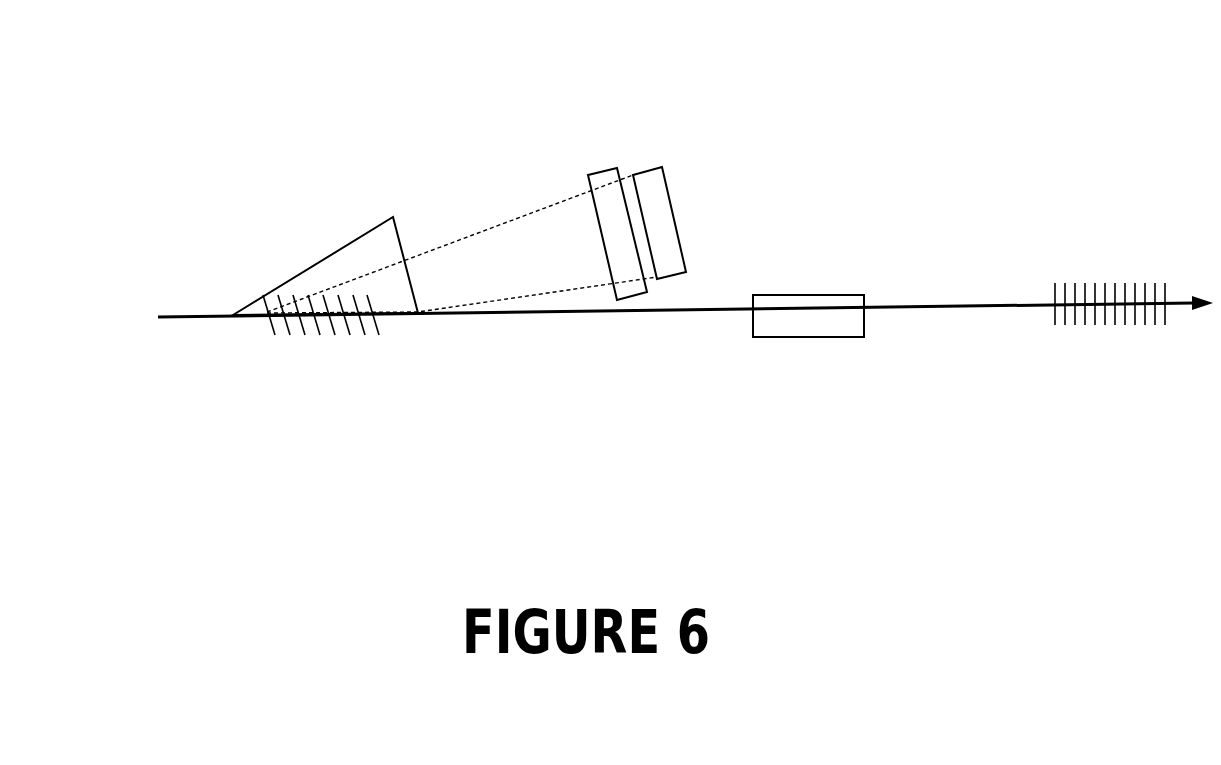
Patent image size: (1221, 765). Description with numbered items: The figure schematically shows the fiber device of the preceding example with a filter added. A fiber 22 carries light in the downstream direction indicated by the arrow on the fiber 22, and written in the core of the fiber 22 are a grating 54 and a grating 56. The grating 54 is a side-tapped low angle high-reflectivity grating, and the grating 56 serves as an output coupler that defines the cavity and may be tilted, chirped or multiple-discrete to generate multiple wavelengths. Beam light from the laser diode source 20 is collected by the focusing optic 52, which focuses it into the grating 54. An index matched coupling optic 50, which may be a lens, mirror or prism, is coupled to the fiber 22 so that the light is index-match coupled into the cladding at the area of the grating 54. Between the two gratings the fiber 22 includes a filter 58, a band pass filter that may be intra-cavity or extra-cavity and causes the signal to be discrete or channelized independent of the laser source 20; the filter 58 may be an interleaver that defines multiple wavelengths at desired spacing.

The laser diode source 20 is at (657, 158).
The fiber 22 is at (668, 323).
The index matched coupling optic 50 is at (368, 220).
The focusing optic 52 is at (600, 160).
The grating 54 is at (327, 343).
The grating 56 is at (1125, 275).
The filter 58 is at (825, 338).